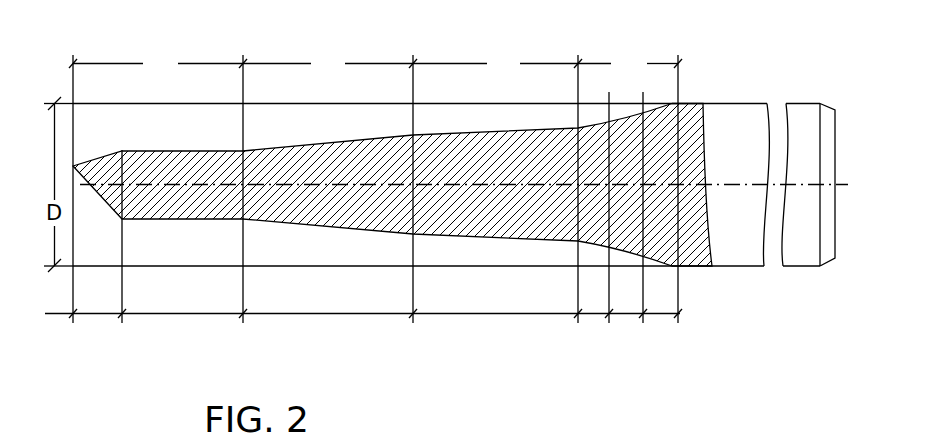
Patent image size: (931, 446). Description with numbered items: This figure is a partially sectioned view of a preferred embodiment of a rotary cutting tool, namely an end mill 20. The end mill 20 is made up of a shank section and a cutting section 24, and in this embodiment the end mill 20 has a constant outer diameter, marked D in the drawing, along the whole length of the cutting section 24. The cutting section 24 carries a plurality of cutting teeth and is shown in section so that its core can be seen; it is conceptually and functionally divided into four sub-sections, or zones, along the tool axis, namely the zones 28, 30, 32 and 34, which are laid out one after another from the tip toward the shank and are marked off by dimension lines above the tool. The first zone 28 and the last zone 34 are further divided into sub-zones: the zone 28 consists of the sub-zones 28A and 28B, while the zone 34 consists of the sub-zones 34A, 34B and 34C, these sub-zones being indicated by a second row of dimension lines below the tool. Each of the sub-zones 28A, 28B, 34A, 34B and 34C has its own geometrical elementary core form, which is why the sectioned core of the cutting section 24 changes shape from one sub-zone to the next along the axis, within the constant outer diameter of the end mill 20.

The end mill 20 is at (720, 71).
The cutting section 24 is at (312, 253).
The first zone 28 is at (174, 73).
The first sub-zone of zone 28 28A is at (104, 316).
The second sub-zone of zone 28 28B is at (201, 316).
The second zone 30 is at (342, 73).
The third zone 32 is at (518, 73).
The fourth zone 34 is at (642, 73).
The first sub-zone of zone 34 34A is at (597, 316).
The second sub-zone of zone 34 34B is at (627, 316).
The third sub-zone of zone 34 34C is at (656, 316).